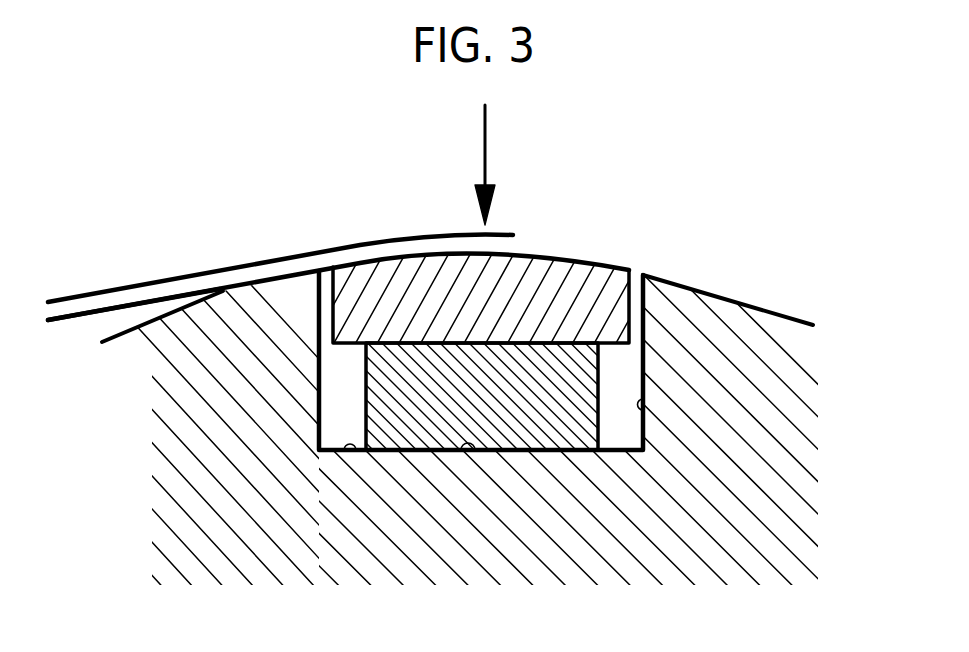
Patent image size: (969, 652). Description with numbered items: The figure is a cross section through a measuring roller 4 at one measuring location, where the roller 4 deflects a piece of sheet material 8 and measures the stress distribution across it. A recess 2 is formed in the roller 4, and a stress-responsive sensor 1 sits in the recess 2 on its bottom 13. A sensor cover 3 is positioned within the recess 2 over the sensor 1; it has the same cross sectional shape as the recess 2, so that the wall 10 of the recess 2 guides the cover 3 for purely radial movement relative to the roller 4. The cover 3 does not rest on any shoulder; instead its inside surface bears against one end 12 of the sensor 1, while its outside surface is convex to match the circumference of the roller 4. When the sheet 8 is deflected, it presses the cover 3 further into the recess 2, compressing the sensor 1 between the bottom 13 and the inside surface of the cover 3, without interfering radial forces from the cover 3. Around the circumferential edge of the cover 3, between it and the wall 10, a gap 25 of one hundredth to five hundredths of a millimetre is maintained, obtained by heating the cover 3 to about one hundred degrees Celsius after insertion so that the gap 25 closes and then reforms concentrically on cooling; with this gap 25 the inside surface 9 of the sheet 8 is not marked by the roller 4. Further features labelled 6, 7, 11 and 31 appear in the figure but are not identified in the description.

The stress-responsive sensor 1 is at (440, 385).
The recess 2 is at (337, 413).
The sensor cover 3 is at (567, 287).
The measuring roller 4 is at (185, 500).
The force transmission plate 6 is at (533, 258).
The housing surface 7 is at (122, 337).
The piece of sheet material 8 is at (253, 265).
The inside surface of the metal sheet 9 is at (88, 316).
The wall of the recess 10 is at (645, 400).
The contact / electrode 11 is at (472, 455).
The end of the stress-responsive sensor 12 is at (412, 343).
The bottom of the recess 13 is at (353, 454).
The gap 25 is at (635, 292).
The direction of applied force 31 is at (498, 165).